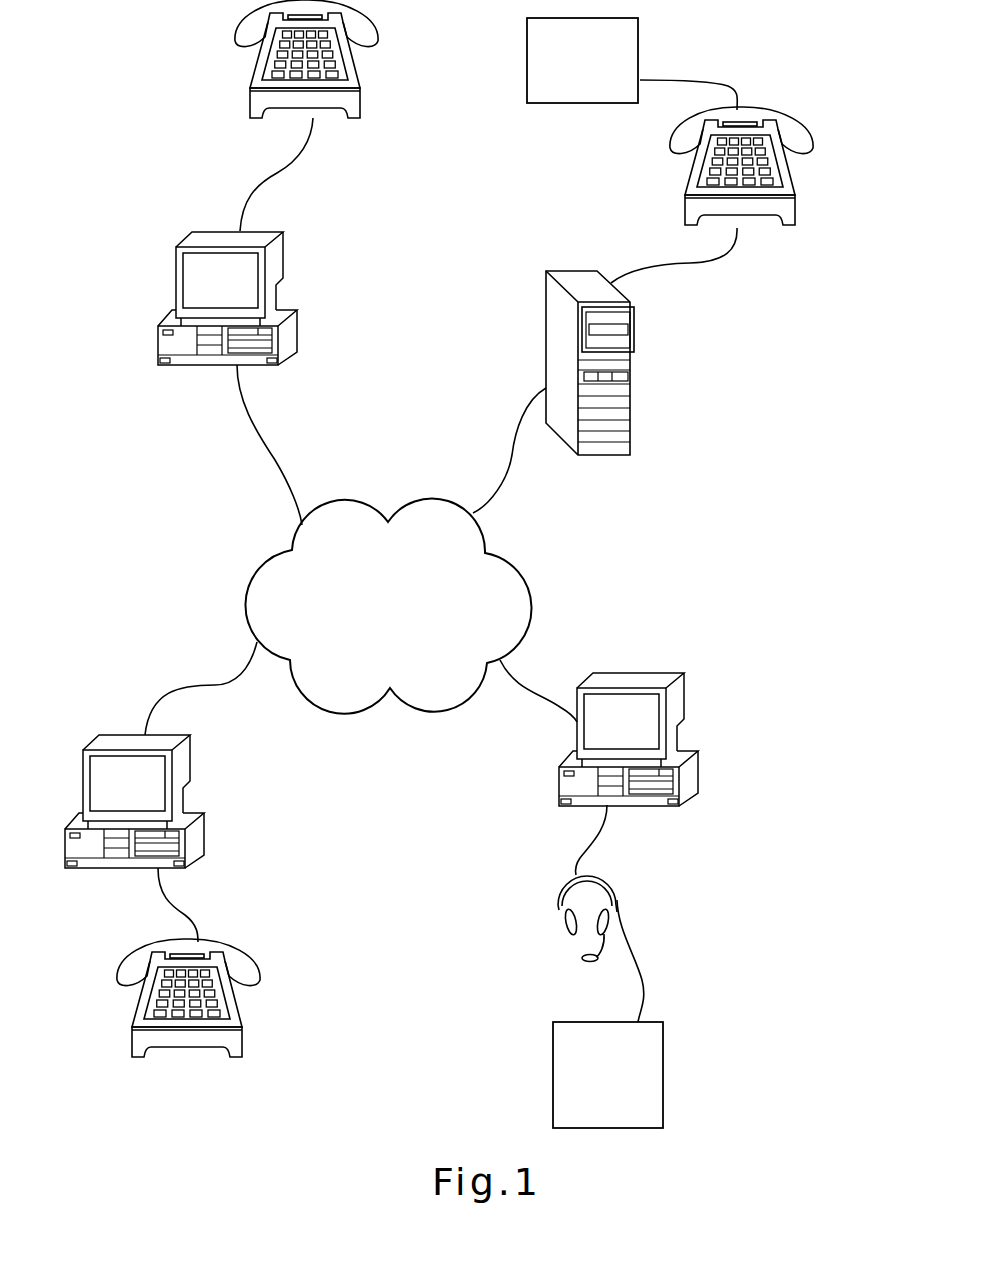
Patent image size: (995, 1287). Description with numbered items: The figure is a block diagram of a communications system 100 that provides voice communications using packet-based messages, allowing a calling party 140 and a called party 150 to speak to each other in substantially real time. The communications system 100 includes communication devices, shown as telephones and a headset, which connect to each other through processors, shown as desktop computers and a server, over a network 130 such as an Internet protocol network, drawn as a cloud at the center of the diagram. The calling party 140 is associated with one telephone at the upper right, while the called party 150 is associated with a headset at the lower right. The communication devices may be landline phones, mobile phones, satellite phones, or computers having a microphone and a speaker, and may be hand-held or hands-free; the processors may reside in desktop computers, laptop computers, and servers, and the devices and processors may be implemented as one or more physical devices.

The communications system 100 is at (166, 180).
The network 130 is at (333, 710).
The calling party 140 is at (640, 57).
The called party 150 is at (664, 1041).